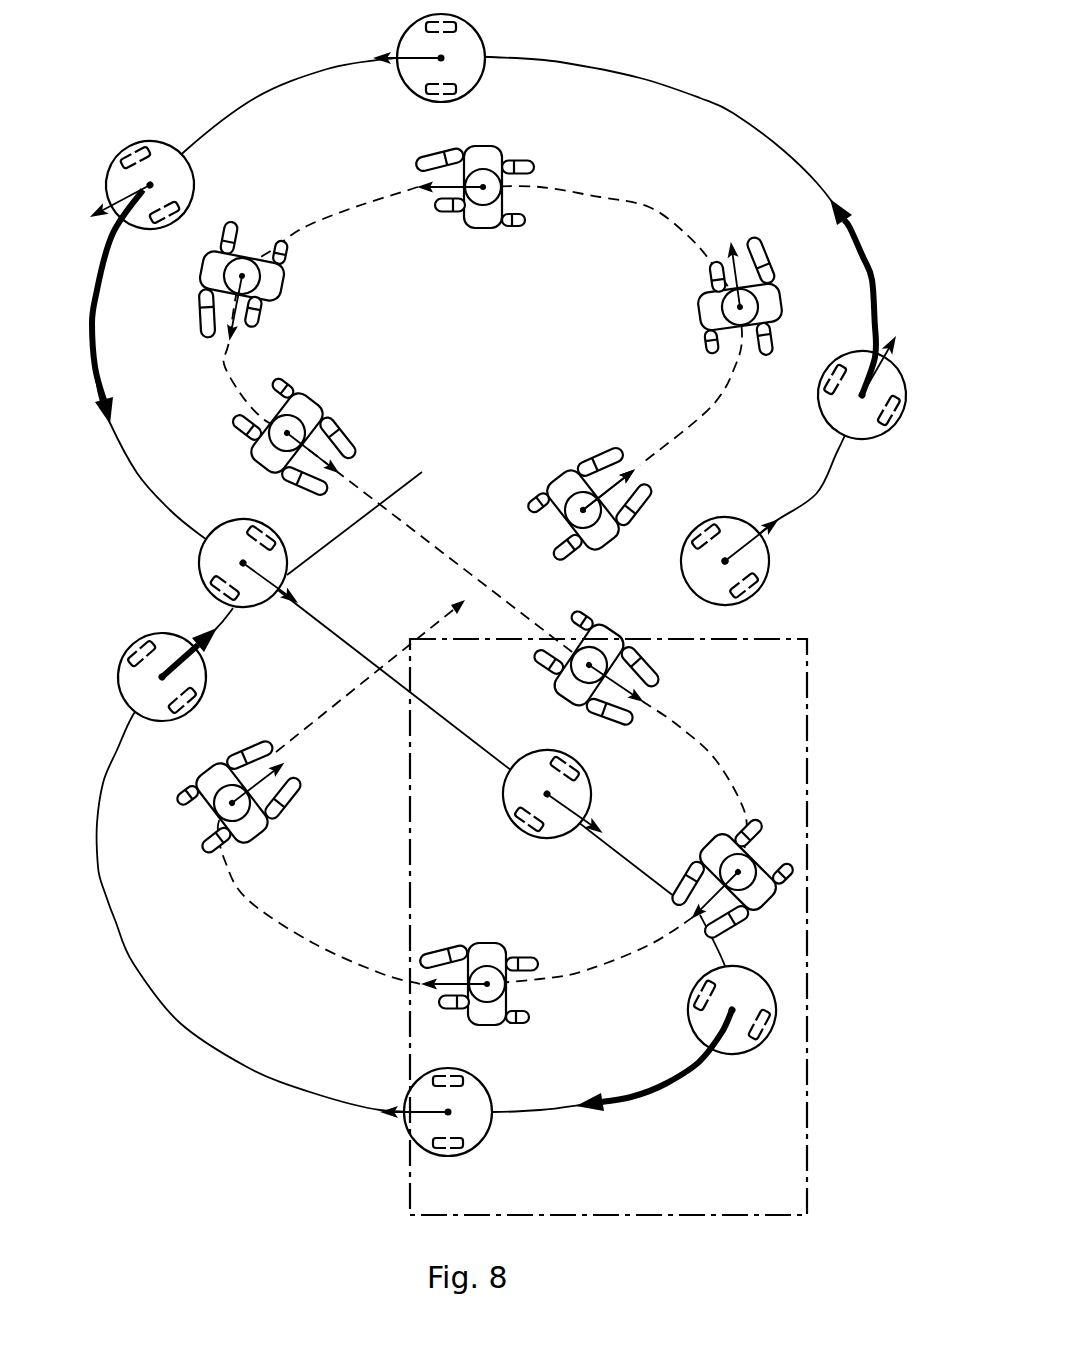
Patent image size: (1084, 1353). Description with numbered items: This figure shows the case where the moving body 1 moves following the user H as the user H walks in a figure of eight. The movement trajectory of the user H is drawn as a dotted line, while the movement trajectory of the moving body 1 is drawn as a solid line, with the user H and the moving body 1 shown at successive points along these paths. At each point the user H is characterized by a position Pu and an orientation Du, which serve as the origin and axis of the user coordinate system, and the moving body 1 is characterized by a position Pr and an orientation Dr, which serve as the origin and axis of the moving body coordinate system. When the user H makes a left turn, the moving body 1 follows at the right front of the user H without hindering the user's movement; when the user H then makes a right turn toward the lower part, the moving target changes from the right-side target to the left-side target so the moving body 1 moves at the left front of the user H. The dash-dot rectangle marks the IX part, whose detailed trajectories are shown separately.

The moving body 1 is at (762, 566).
The position of the moving body Pr is at (725, 561).
The orientation of the moving body Dr is at (752, 526).
The user H is at (597, 540).
The position of the user Pu is at (560, 527).
The orientation of the user Du is at (613, 478).
The IX part IX is at (807, 699).